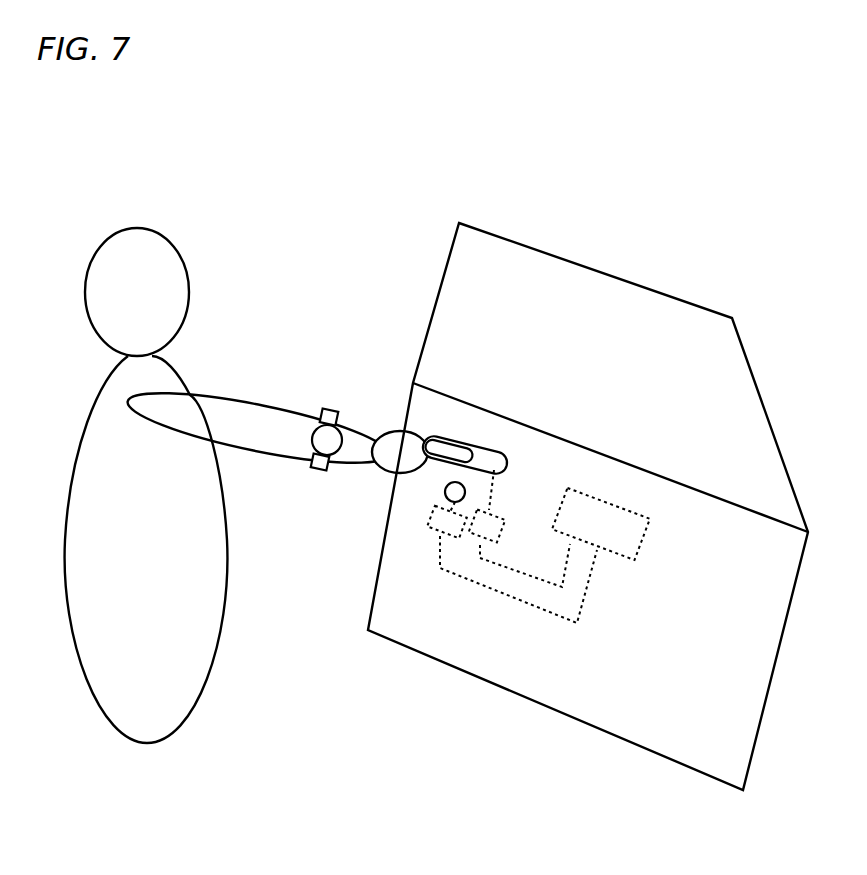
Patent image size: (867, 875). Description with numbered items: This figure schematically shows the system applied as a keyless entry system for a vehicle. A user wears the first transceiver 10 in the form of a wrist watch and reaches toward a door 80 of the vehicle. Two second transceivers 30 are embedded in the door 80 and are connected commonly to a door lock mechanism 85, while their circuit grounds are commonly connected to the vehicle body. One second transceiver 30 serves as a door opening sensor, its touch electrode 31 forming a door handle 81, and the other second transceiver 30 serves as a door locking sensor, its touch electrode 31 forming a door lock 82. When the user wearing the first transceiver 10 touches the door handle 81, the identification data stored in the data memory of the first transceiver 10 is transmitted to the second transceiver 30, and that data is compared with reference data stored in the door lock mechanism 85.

The first transceiver 10 is at (308, 453).
The second transceiver 30 is at (506, 520).
The touch electrode 31 is at (447, 464).
The door 80 is at (760, 682).
The door handle 81 is at (458, 442).
The door lock 82 is at (445, 492).
The door lock mechanism 85 is at (643, 535).